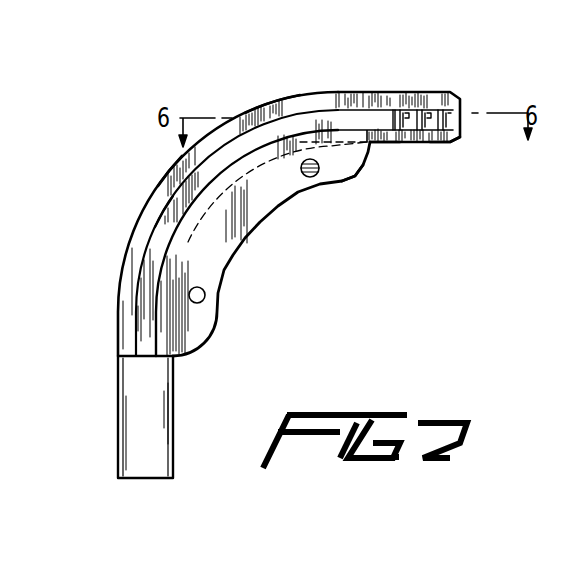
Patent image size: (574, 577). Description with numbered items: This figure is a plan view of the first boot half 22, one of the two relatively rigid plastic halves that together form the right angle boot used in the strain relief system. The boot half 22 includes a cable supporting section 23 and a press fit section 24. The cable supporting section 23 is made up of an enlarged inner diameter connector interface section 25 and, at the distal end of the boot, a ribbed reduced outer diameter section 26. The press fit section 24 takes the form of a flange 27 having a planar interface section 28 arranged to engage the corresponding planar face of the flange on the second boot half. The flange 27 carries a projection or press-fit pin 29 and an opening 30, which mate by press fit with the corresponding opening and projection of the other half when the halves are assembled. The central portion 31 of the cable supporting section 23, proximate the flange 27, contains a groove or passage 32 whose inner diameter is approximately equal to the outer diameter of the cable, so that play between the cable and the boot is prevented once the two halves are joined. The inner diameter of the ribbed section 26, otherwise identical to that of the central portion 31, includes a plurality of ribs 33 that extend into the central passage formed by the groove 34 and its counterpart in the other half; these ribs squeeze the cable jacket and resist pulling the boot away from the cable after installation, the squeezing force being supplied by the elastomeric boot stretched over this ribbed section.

The boot half 22 is at (123, 273).
The cable supporting section 23 is at (267, 108).
The press fit section 24 is at (222, 240).
The connector interface section 25 is at (160, 426).
The ribbed reduced outer diameter section 26 is at (382, 92).
The flange 27 is at (372, 147).
The planar interface section 28 is at (290, 198).
The press-fit pin 29 is at (320, 170).
The opening 30 is at (205, 298).
The central portion 31 is at (177, 177).
The groove 32 is at (167, 230).
The ribs 33 is at (433, 99).
The groove 34 is at (443, 143).